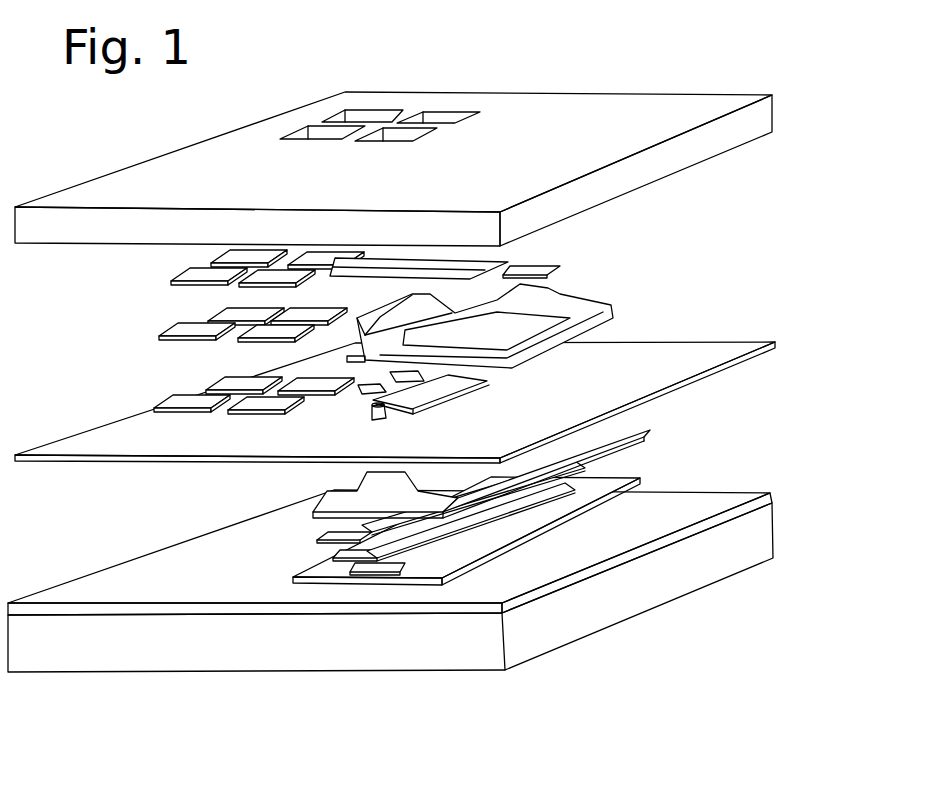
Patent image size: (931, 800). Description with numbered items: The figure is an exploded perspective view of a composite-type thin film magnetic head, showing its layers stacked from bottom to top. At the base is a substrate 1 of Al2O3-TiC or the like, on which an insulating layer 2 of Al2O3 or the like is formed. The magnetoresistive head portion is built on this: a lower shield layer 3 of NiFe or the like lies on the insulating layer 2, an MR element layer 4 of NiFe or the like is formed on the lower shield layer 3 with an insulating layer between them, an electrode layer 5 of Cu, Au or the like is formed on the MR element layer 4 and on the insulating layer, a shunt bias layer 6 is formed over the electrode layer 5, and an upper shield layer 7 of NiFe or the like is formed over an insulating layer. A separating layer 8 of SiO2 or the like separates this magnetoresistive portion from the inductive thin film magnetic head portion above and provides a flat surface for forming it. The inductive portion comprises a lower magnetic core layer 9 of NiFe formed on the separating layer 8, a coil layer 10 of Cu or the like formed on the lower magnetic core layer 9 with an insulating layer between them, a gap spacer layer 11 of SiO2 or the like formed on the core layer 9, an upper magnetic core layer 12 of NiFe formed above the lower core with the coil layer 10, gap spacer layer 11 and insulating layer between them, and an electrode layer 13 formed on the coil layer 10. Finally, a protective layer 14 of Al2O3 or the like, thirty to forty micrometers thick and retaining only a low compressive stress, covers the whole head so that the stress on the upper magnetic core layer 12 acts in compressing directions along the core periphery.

The substrate 1 is at (615, 604).
The insulating layer 2 is at (770, 493).
The lower shield layer 3 is at (618, 493).
The MR element layer 4 is at (350, 568).
The electrode layer 5 is at (333, 537).
The shunt bias layer 6 is at (317, 513).
The upper shield layer 7 is at (587, 432).
The separating layer 8 is at (708, 357).
The lower magnetic core layer 9 is at (453, 383).
The coil layer 10 is at (610, 305).
The gap spacer layer 11 is at (365, 410).
The upper magnetic core layer 12 is at (500, 260).
The electrode layer 13 is at (190, 270).
The protective layer 14 is at (580, 107).